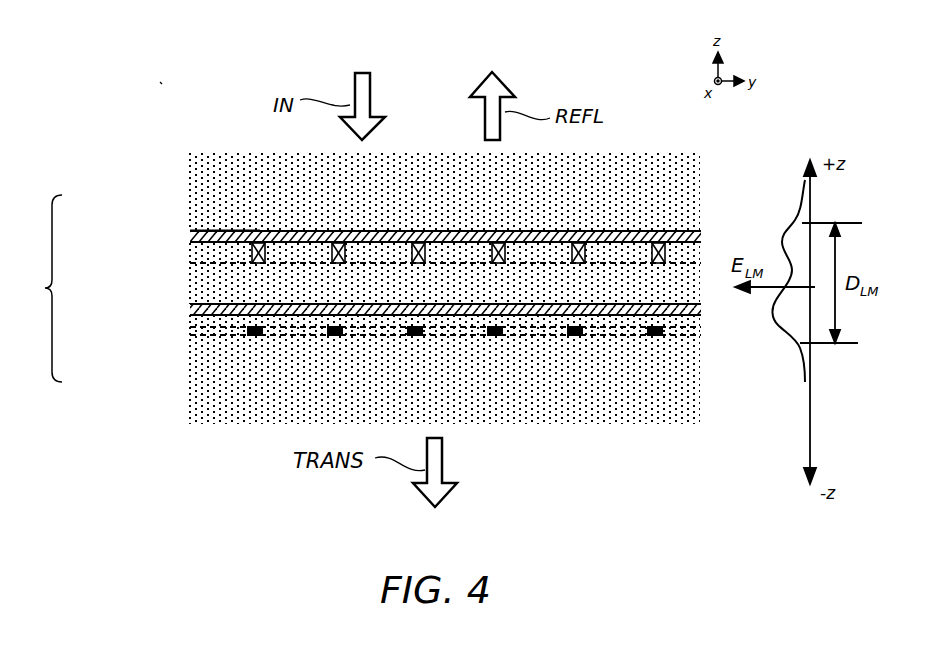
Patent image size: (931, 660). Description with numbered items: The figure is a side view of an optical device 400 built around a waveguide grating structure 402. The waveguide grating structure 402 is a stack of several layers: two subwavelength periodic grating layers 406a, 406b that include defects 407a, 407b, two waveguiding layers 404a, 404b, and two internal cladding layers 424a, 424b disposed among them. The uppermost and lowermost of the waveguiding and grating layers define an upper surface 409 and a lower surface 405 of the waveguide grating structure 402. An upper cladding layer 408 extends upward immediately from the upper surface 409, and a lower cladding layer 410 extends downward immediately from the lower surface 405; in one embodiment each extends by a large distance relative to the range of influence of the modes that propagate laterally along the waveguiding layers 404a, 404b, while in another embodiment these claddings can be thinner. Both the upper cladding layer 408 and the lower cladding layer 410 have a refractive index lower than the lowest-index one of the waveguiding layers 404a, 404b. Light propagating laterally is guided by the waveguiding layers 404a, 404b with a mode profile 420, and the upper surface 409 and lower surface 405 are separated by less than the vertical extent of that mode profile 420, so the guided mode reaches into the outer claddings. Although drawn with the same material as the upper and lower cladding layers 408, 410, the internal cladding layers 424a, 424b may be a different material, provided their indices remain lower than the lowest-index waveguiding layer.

The optical device 400 is at (160, 82).
The waveguide grating structure 402 is at (31, 288).
The waveguiding layer 404a is at (187, 233).
The subwavelength periodic grating layer 406a is at (187, 253).
The internal cladding layer 424a is at (187, 287).
The waveguiding layer 404b is at (187, 310).
The internal cladding layer 424b is at (187, 322).
The subwavelength periodic grating layer 406b is at (190, 331).
The lower surface 405 is at (220, 333).
The defects 407a is at (332, 252).
The defects 407b is at (333, 338).
The upper cladding layer 408 is at (590, 191).
The upper surface 409 is at (190, 230).
The lower cladding layer 410 is at (585, 411).
The mode profile 420 is at (783, 230).